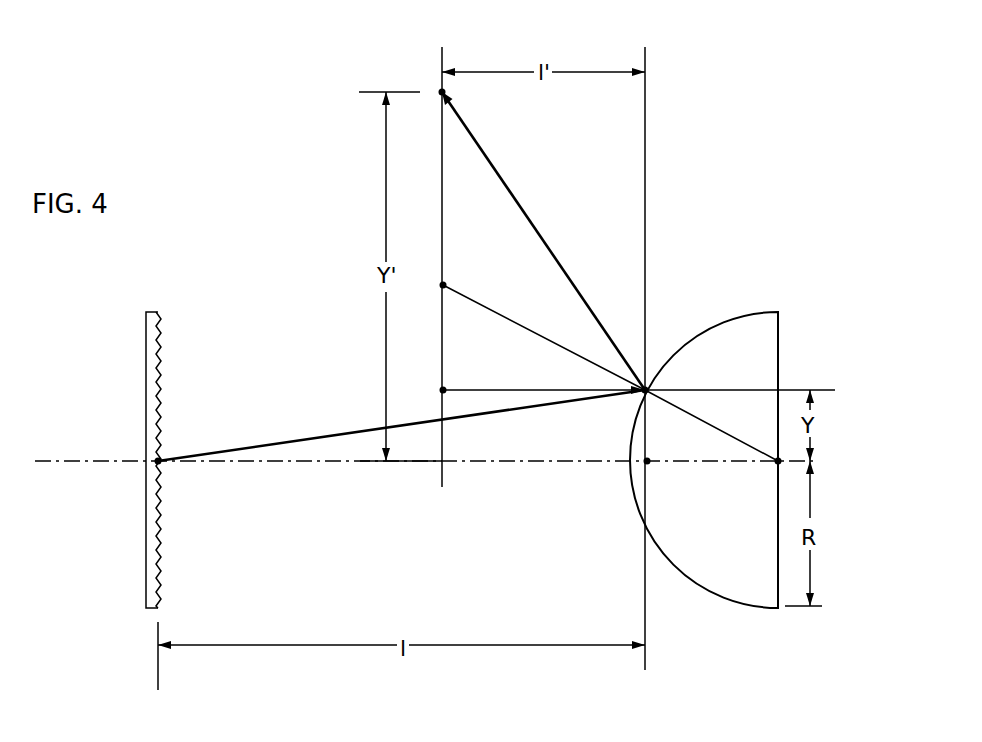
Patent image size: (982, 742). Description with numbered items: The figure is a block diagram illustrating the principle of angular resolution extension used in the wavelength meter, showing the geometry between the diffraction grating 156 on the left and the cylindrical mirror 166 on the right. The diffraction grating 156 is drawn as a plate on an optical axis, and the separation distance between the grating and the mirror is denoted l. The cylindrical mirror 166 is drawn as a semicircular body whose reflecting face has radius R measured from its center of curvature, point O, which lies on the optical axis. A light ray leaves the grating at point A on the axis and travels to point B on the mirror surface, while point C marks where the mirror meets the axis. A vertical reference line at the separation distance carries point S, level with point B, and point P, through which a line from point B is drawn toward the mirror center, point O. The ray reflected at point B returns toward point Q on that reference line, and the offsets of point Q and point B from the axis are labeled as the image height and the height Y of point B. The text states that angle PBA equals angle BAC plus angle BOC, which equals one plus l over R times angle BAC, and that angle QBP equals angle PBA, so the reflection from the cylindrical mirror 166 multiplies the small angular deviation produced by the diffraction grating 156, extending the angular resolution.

The diffraction grating 156 is at (158, 312).
The cylindrical mirror 166 is at (778, 352).
The point A is at (171, 448).
The point B is at (656, 379).
The point C is at (656, 473).
The point O is at (768, 473).
The point P is at (432, 286).
The point Q is at (430, 81).
The point S is at (432, 392).